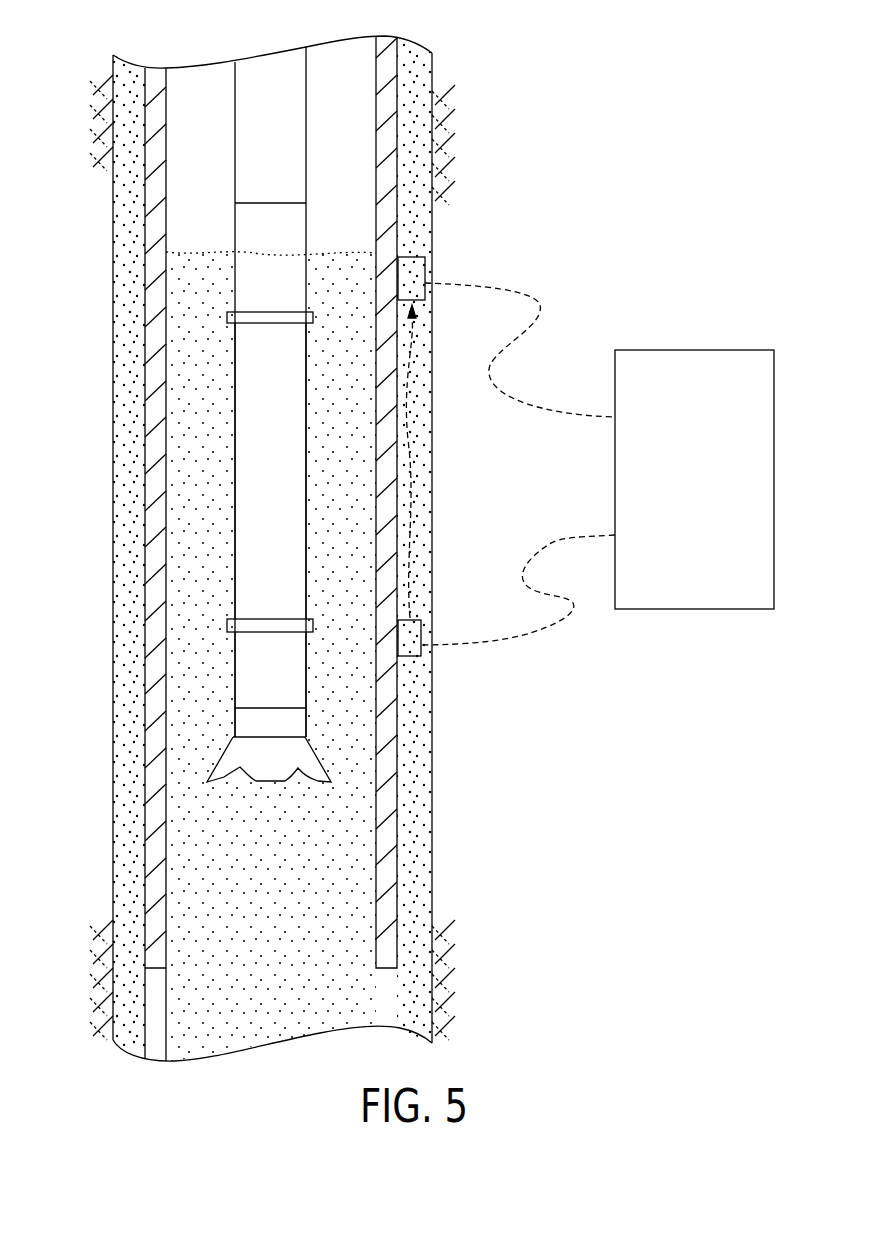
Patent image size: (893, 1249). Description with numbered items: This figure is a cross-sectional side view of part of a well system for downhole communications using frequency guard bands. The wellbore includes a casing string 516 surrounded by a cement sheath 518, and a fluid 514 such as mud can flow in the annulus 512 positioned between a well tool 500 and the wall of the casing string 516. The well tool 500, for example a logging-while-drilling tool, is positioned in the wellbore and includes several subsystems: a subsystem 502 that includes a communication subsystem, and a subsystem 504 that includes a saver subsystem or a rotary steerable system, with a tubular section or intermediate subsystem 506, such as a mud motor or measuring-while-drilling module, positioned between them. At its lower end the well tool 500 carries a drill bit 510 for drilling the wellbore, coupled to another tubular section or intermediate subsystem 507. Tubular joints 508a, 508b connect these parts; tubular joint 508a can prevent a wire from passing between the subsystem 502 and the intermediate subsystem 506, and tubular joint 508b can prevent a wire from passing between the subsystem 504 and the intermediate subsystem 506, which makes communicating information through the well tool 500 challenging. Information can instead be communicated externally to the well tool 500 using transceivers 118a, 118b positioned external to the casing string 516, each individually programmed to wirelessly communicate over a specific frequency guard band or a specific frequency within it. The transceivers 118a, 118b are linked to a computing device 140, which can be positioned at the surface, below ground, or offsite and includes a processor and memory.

The well tool 500 is at (235, 148).
The subsystem 502 is at (290, 227).
The subsystem 504 is at (297, 672).
The intermediate subsystem 506 is at (250, 403).
The intermediate subsystem 507 is at (297, 720).
The tubular joint 508a is at (228, 316).
The tubular joint 508b is at (227, 625).
The drill bit 510 is at (288, 783).
The annulus 512 is at (182, 228).
The fluid 514 is at (360, 893).
The casing string 516 is at (157, 510).
The cement sheath 518 is at (125, 690).
The transceiver 118a is at (415, 272).
The transceiver 118b is at (413, 637).
The computing device 140 is at (696, 350).